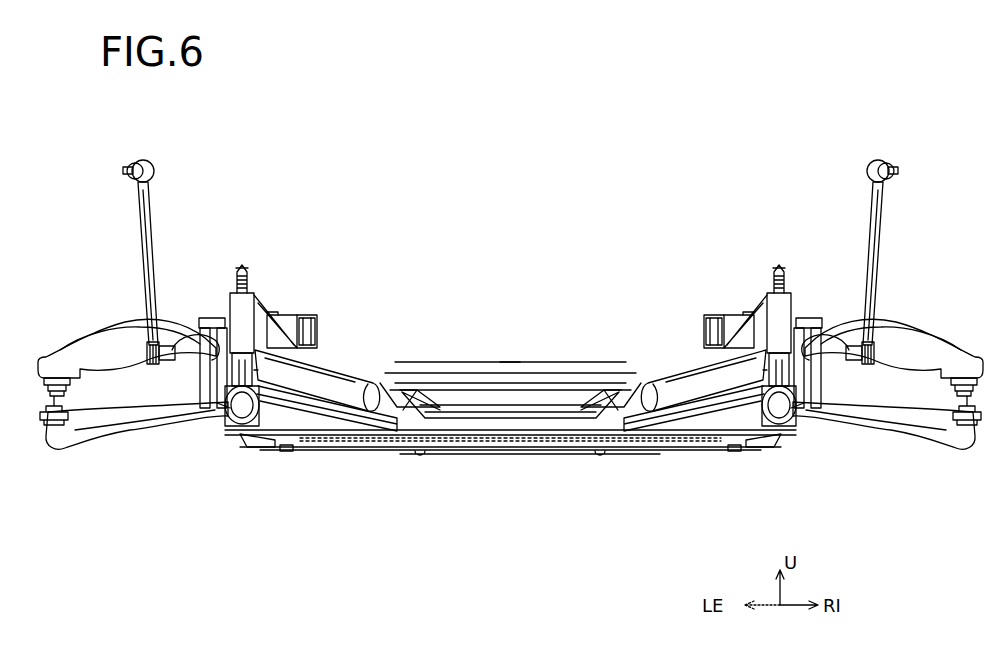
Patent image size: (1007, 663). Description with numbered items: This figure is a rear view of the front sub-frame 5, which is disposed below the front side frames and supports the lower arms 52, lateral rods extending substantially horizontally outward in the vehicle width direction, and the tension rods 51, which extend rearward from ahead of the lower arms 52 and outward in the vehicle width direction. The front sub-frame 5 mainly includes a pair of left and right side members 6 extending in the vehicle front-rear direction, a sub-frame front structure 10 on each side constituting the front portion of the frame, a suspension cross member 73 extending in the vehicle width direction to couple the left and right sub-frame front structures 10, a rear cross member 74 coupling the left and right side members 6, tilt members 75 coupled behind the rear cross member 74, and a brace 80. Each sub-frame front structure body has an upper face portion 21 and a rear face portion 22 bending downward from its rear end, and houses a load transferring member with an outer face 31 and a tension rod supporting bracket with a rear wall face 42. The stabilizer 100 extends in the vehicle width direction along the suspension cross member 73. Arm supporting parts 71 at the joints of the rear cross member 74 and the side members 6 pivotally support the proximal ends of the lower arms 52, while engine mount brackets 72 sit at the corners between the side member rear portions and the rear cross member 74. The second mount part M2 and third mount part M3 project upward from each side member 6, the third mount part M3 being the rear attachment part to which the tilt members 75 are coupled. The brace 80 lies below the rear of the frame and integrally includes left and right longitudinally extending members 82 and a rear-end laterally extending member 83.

The front sub-frame 5 is at (563, 296).
The side member 6 is at (219, 415).
The sub-frame front structure 10 is at (216, 292).
The upper face portion 21 is at (289, 315).
The rear face portion 22 is at (318, 318).
The outer face 31 is at (203, 383).
The rear wall face 42 is at (316, 336).
The tension rod 51 is at (96, 371).
The lower arm 52 is at (133, 437).
The arm supporting part 71 is at (214, 418).
The engine mount bracket 72 is at (335, 378).
The suspension cross member 73 is at (484, 388).
The rear cross member 74 is at (484, 414).
The tilt member 75 is at (392, 396).
The brace 80 is at (354, 464).
The longitudinally extending member 82 is at (250, 447).
The rear-end laterally extending member 83 is at (554, 453).
The stabilizer 100 is at (449, 362).
The second mount part M2 is at (266, 277).
The third mount part M3 is at (258, 373).